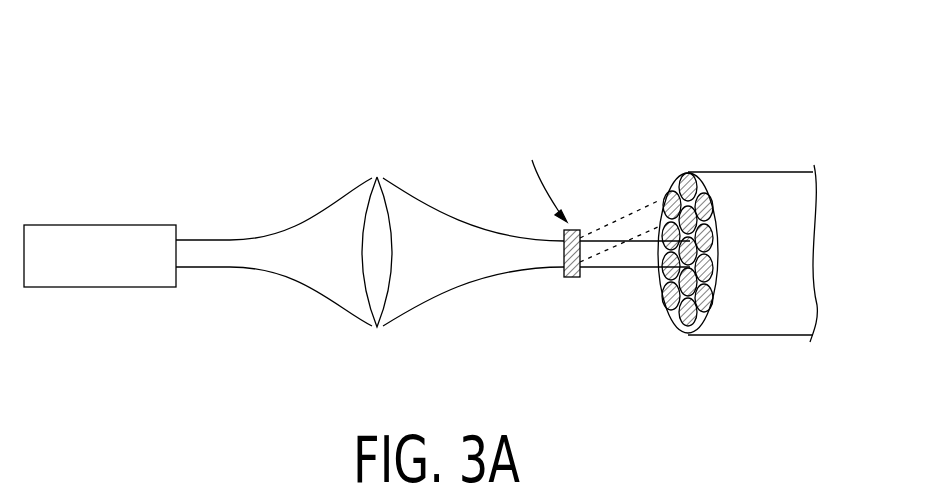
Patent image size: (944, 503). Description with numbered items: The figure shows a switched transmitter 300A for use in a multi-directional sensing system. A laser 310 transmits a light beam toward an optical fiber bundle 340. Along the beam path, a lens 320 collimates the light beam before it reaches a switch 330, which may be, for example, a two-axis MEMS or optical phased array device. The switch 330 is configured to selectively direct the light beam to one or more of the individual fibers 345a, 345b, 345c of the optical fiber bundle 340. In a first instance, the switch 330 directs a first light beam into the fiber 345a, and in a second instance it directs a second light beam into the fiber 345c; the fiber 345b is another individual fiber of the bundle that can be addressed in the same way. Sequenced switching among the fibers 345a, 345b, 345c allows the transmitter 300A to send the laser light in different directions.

The switched transmitter 300A is at (183, 110).
The laser 310 is at (99, 287).
The lens 320 is at (377, 327).
The switch 330 is at (572, 277).
The optical fiber bundle 340 is at (739, 245).
The fiber 345a is at (662, 208).
The fiber 345b is at (706, 210).
The fiber 345c is at (695, 250).